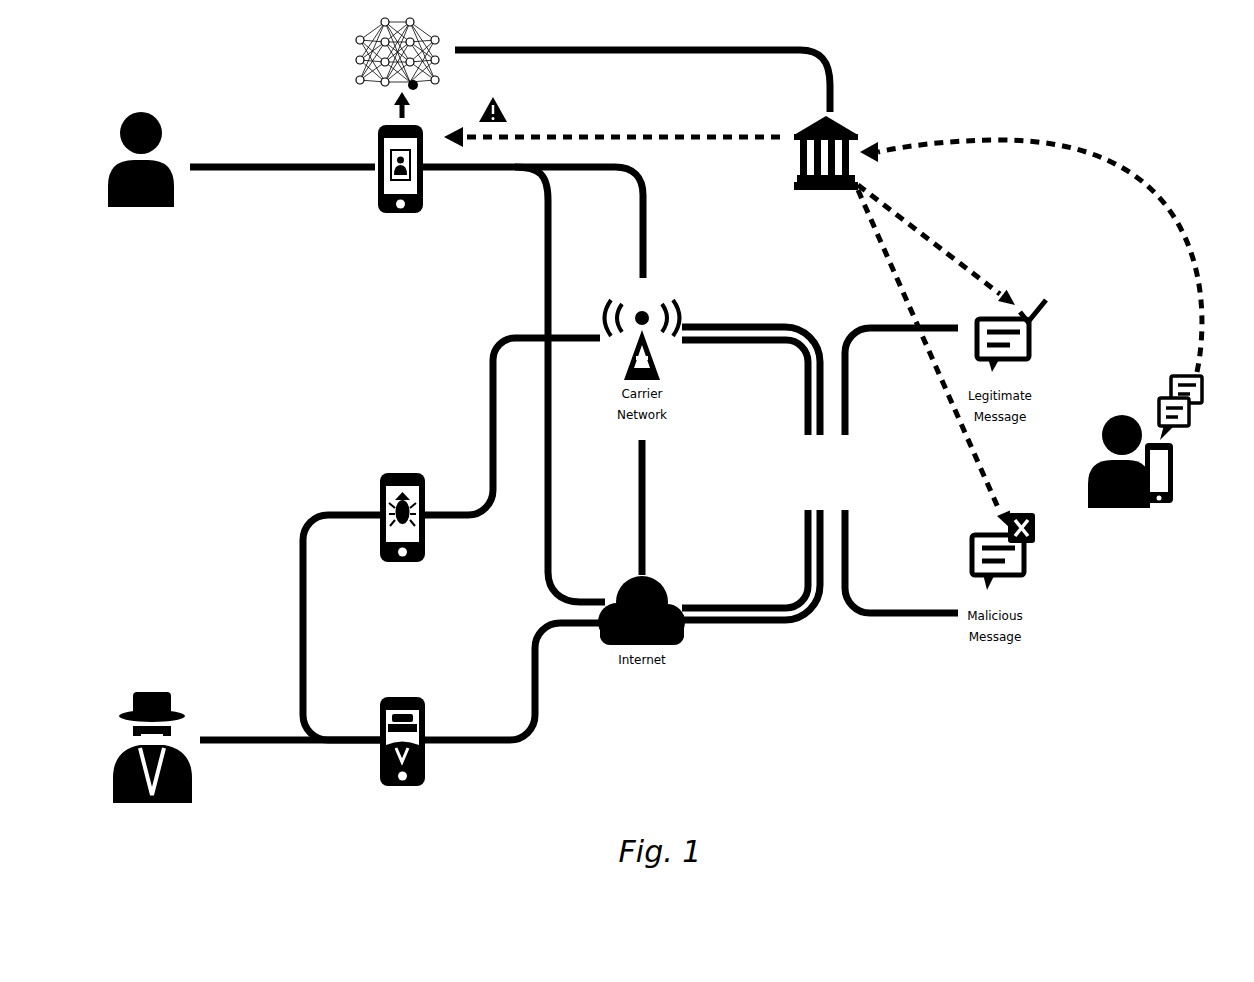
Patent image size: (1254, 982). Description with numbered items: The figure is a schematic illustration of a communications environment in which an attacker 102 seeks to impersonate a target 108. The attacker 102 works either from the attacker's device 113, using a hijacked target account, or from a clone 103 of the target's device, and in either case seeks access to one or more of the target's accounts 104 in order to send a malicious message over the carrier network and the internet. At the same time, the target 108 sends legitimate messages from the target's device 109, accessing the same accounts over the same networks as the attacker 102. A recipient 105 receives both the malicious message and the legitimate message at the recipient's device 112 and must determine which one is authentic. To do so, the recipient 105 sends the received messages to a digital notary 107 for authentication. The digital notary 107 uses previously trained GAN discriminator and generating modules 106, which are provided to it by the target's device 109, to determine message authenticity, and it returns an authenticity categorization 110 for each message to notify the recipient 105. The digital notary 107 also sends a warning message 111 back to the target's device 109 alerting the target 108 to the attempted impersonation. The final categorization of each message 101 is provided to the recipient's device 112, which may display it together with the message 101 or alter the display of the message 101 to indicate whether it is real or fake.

The message 101 is at (1160, 392).
The attacker 102 is at (202, 786).
The clone of the target's device 103 is at (377, 538).
The target's accounts 104 is at (886, 490).
The recipient 105 is at (1084, 496).
The trained GAN discriminator and generating modules 106 is at (351, 85).
The digital notary 107 is at (796, 165).
The target 108 is at (183, 191).
The target's device 109 is at (375, 190).
The authenticity categorization 110 is at (937, 233).
The warning message 111 is at (509, 113).
The recipient's device 112 is at (1180, 486).
The attacker's device 113 is at (437, 768).